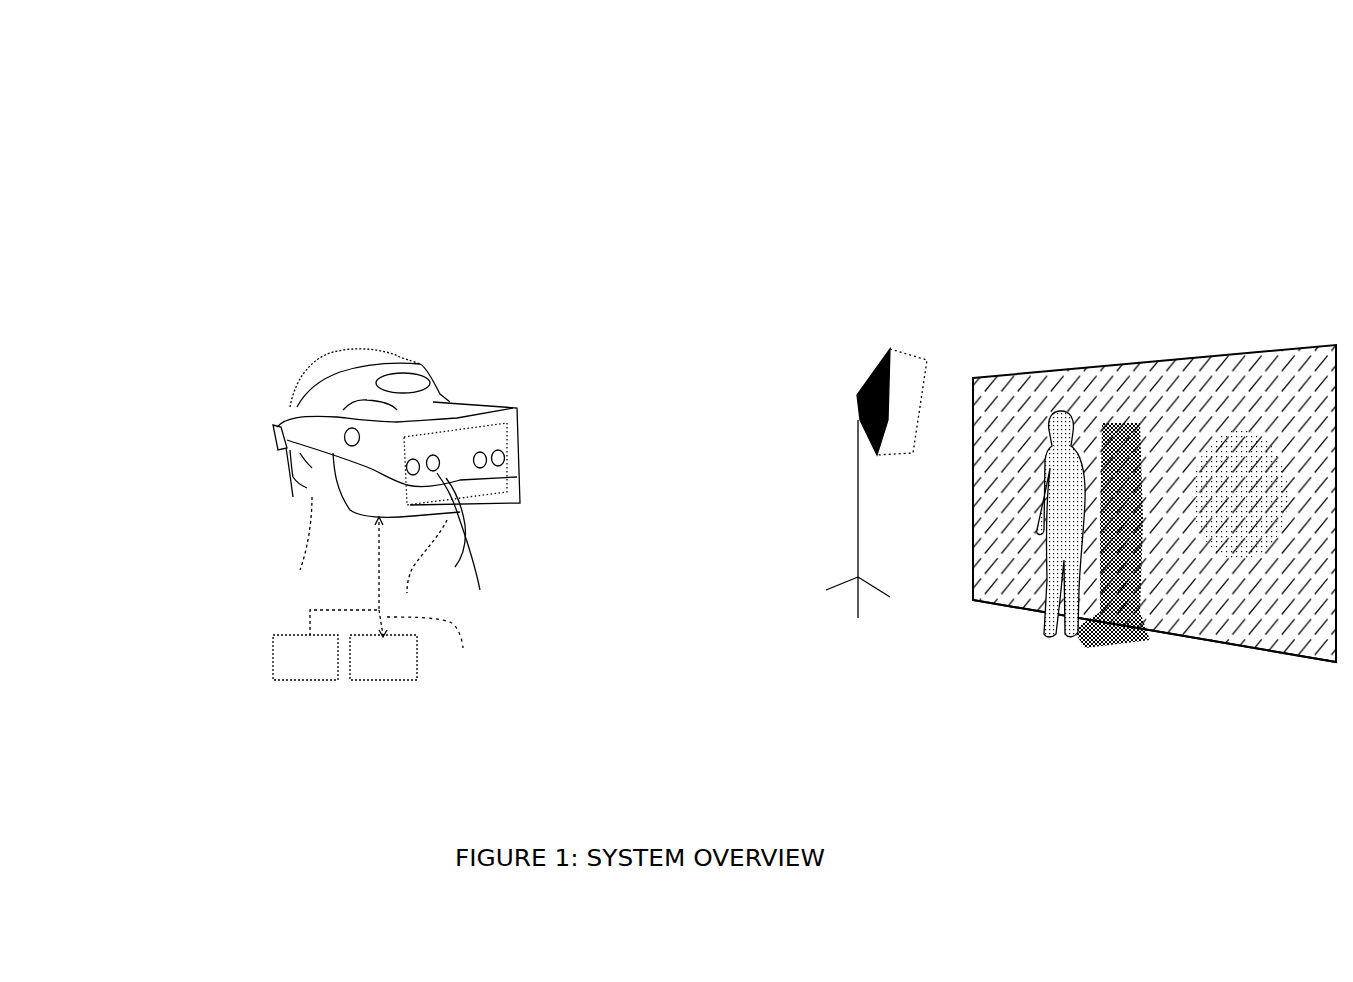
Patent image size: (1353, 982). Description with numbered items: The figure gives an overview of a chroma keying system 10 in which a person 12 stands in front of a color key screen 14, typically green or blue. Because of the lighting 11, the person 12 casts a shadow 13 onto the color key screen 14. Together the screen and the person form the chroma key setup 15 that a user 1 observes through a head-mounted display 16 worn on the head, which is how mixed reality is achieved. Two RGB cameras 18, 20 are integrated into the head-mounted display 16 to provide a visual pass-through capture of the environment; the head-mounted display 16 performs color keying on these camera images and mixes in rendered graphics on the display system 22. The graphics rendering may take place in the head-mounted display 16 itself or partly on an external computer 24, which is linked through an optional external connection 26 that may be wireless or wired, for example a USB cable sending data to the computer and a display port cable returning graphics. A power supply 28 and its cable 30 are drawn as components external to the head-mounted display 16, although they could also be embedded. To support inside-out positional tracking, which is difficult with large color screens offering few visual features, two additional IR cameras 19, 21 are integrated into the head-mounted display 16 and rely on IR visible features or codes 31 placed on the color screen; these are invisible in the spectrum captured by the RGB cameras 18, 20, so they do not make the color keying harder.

The user 1 is at (298, 557).
The chroma keying system 10 is at (634, 130).
The lighting 11 is at (860, 382).
The person 12 is at (1047, 437).
The shadow 13 is at (1096, 640).
The color key screen 14 is at (1193, 630).
The chroma key setup 15 is at (908, 657).
The head-mounted display 16 is at (326, 476).
The RGB camera 18 is at (483, 455).
The IR camera 19 is at (500, 455).
The RGB camera 20 is at (469, 544).
The IR camera 21 is at (433, 556).
The display system 22 is at (484, 497).
The external computer 24 is at (383, 682).
The external connection 26 is at (436, 647).
The power supply 28 is at (305, 682).
The cable 30 is at (372, 577).
The IR visible features or codes 31 is at (1280, 548).